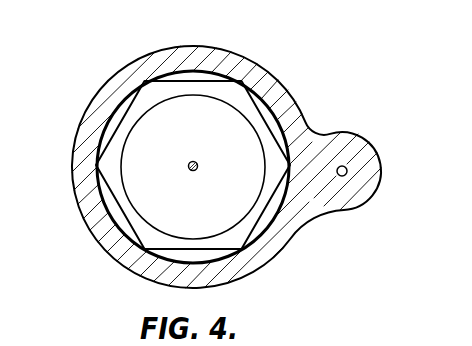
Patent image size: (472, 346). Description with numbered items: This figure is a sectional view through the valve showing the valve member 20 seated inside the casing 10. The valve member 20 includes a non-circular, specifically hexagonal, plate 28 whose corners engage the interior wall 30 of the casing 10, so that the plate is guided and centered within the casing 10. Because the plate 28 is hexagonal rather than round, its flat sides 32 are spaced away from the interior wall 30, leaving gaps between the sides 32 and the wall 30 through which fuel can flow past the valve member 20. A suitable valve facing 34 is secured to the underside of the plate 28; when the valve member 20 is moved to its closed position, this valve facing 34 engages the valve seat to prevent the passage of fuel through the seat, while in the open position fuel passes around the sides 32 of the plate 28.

The casing 10 is at (190, 47).
The valve member 20 is at (150, 93).
The hexagon plate 28 is at (127, 212).
The interior wall 30 is at (100, 192).
The sides 32 is at (148, 277).
The valve facing 34 is at (200, 217).